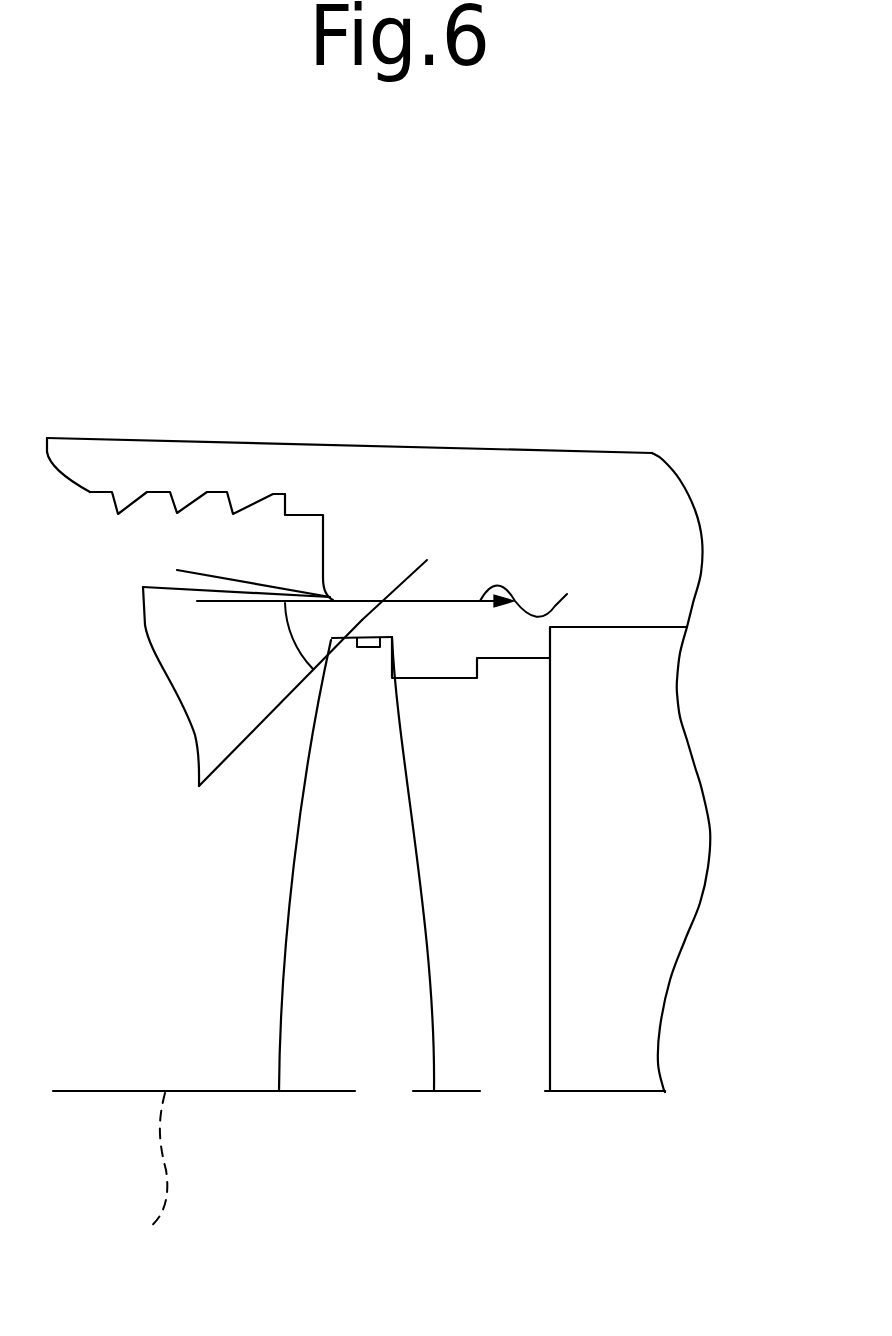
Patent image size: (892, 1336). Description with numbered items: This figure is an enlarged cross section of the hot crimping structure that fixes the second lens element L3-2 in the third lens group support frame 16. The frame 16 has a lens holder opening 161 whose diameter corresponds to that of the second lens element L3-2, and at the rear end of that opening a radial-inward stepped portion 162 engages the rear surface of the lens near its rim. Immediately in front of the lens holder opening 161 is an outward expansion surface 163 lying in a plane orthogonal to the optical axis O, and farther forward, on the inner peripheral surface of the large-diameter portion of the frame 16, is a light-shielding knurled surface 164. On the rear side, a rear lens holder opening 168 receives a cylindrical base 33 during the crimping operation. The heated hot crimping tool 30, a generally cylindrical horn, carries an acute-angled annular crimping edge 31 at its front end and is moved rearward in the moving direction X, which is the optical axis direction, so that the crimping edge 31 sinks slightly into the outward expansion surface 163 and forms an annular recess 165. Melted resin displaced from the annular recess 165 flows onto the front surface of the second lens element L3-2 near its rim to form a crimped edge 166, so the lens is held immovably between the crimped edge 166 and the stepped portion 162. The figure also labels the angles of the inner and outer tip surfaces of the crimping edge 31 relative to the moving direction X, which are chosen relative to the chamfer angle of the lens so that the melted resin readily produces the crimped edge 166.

The third lens group support frame 16 is at (417, 463).
The lens holder opening 161 is at (385, 612).
The radial-inward stepped portion 162 is at (394, 669).
The outward expansion surface 163 is at (322, 538).
The light-shielding knurled surface 164 is at (207, 493).
The annular recess 165 is at (503, 555).
The annular crimping edge 31 is at (350, 620).
The crimped edge 166 is at (333, 645).
The rear lens holder opening 168 is at (590, 630).
The hot crimping tool 30 is at (190, 665).
The cylindrical base 33 is at (635, 943).
The second lens element L3-2 is at (310, 987).
The optical axis O is at (142, 1182).
The moving direction of the hot crimping tool X is at (392, 588).